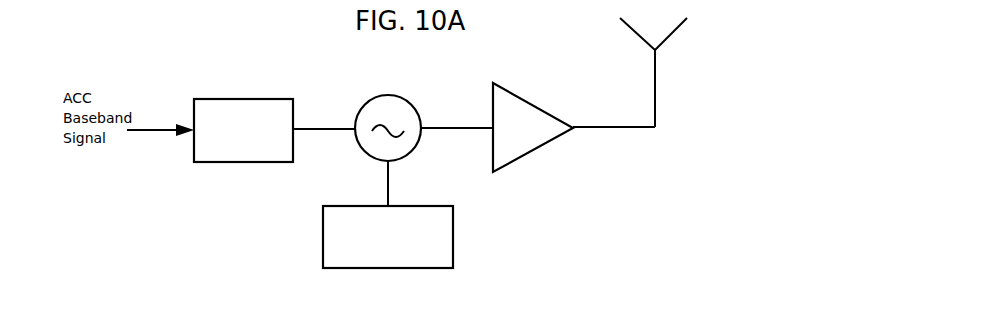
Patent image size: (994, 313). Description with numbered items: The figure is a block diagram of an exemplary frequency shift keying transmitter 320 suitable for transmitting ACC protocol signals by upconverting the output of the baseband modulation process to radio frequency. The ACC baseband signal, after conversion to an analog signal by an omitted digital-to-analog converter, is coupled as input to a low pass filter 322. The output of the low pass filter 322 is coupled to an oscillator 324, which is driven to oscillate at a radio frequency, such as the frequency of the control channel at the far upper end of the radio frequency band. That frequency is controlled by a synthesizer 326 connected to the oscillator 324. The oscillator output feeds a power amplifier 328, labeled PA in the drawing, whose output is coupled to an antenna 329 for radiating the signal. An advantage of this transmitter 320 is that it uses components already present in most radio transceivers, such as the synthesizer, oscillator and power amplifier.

The frequency shift keying (FSK) transmitter 320 is at (616, 181).
The low pass filter 322 is at (242, 162).
The oscillator 324 is at (403, 102).
The synthesizer 326 is at (453, 236).
The power amplifier 328 is at (522, 97).
The antenna 329 is at (655, 80).